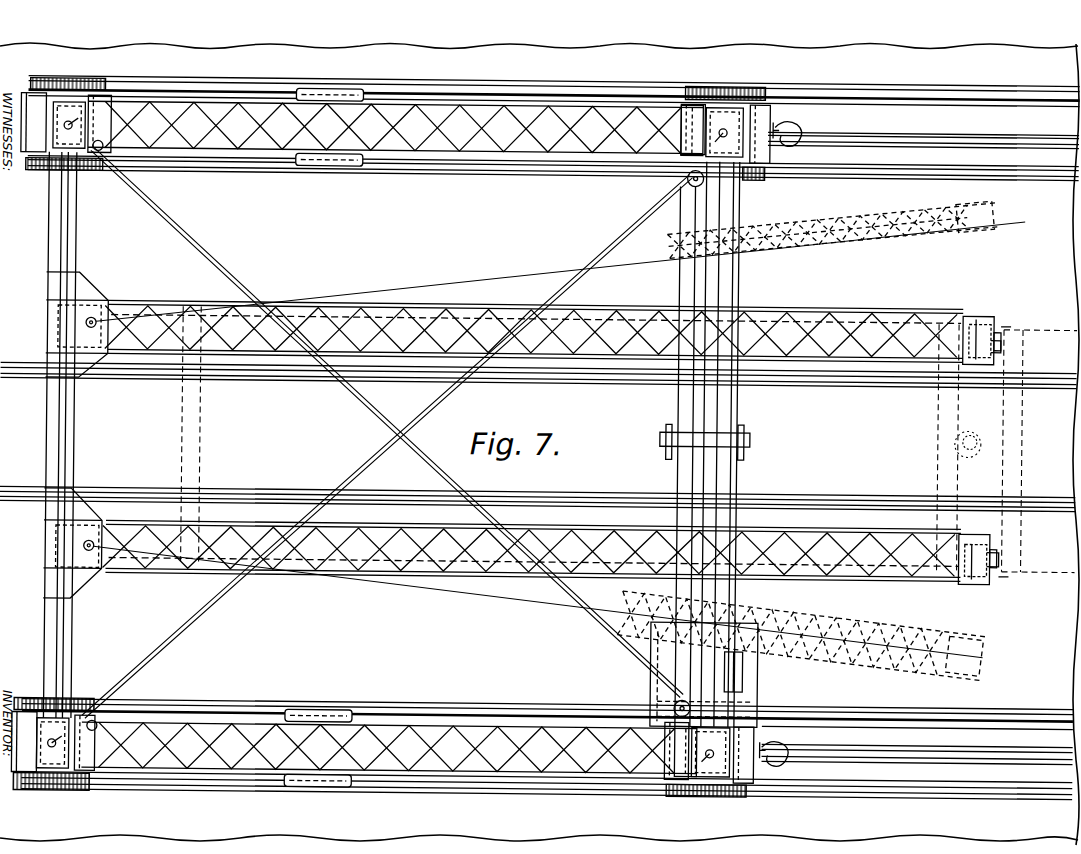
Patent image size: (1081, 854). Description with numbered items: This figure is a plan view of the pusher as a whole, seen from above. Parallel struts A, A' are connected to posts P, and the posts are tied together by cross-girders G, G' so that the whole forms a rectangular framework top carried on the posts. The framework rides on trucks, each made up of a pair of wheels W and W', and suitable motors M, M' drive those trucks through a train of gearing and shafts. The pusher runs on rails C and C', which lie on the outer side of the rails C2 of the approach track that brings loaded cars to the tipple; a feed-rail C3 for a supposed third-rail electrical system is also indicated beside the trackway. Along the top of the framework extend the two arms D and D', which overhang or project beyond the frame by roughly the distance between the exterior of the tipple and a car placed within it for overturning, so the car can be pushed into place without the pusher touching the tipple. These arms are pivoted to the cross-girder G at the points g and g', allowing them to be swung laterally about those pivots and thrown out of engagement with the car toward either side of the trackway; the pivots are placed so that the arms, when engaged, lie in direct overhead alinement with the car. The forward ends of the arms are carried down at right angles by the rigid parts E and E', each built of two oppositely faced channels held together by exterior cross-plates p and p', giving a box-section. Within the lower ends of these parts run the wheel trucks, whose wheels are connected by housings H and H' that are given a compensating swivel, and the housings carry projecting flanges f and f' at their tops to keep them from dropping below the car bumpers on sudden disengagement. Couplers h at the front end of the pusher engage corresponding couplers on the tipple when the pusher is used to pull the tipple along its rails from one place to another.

The wheel W is at (64, 419).
The post P is at (65, 115).
The motor M' is at (329, 149).
The strut A' is at (395, 127).
The wheel W' is at (416, 439).
The rail C' is at (553, 137).
The feed-rail C3 is at (1000, 130).
The coupler h is at (793, 148).
The pivotal point g' is at (515, 299).
The arm D' is at (552, 277).
The projecting flange f is at (942, 427).
The cross-plate p is at (954, 440).
The rigid part E' is at (1000, 324).
The cross-plate p' is at (1032, 444).
The projecting flange f' is at (1028, 449).
The housing H' is at (1024, 354).
The approach-track rail C2 is at (855, 380).
The cross-girder G is at (78, 435).
The cross-girder G' is at (728, 444).
The housing H is at (1015, 551).
The pivotal point g is at (495, 572).
The arm D is at (543, 600).
The rigid part E is at (977, 575).
The motor M is at (318, 726).
The strut A is at (388, 748).
The rail C is at (547, 756).